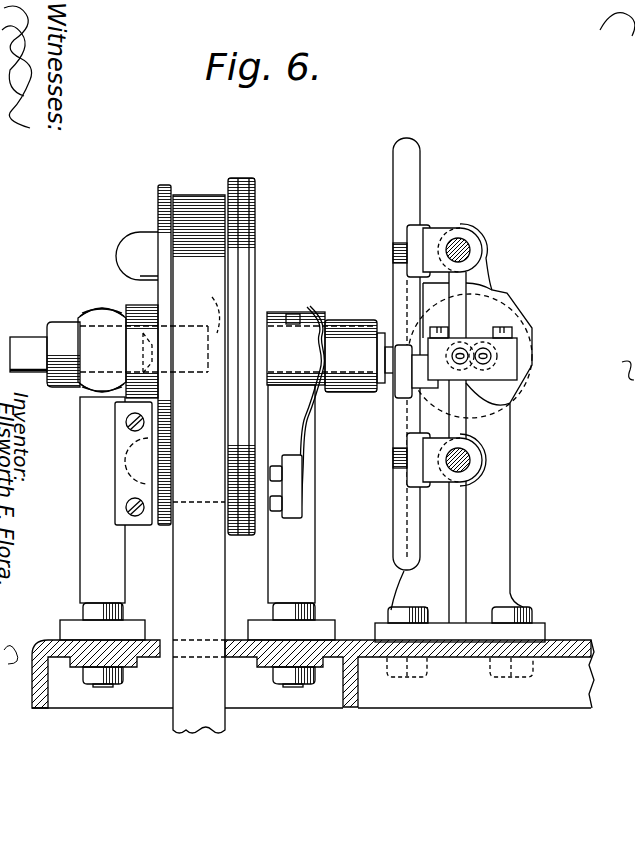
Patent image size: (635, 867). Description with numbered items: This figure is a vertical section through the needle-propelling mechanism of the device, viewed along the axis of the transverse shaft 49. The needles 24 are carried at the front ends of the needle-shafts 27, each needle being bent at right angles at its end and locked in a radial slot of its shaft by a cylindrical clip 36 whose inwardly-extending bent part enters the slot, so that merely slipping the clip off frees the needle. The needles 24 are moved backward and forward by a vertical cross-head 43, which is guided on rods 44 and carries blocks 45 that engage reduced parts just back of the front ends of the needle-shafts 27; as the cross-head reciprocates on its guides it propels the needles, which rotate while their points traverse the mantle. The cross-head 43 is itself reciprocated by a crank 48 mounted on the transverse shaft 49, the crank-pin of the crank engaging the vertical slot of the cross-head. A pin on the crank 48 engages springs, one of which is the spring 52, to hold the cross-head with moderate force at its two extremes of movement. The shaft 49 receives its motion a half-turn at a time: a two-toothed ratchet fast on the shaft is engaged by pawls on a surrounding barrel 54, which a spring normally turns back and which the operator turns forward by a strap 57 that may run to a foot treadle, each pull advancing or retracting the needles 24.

The needle 24 is at (488, 348).
The needle-shaft 27 is at (492, 368).
The cylindrical clip 36 is at (462, 352).
The vertical cross-head 43 is at (413, 162).
The rod 44 is at (462, 247).
The block 45 is at (505, 338).
The crank 48 is at (356, 335).
The transverse shaft 49 is at (205, 301).
The spring 52 is at (313, 440).
The barrel 54 is at (239, 180).
The strap 57 is at (222, 560).